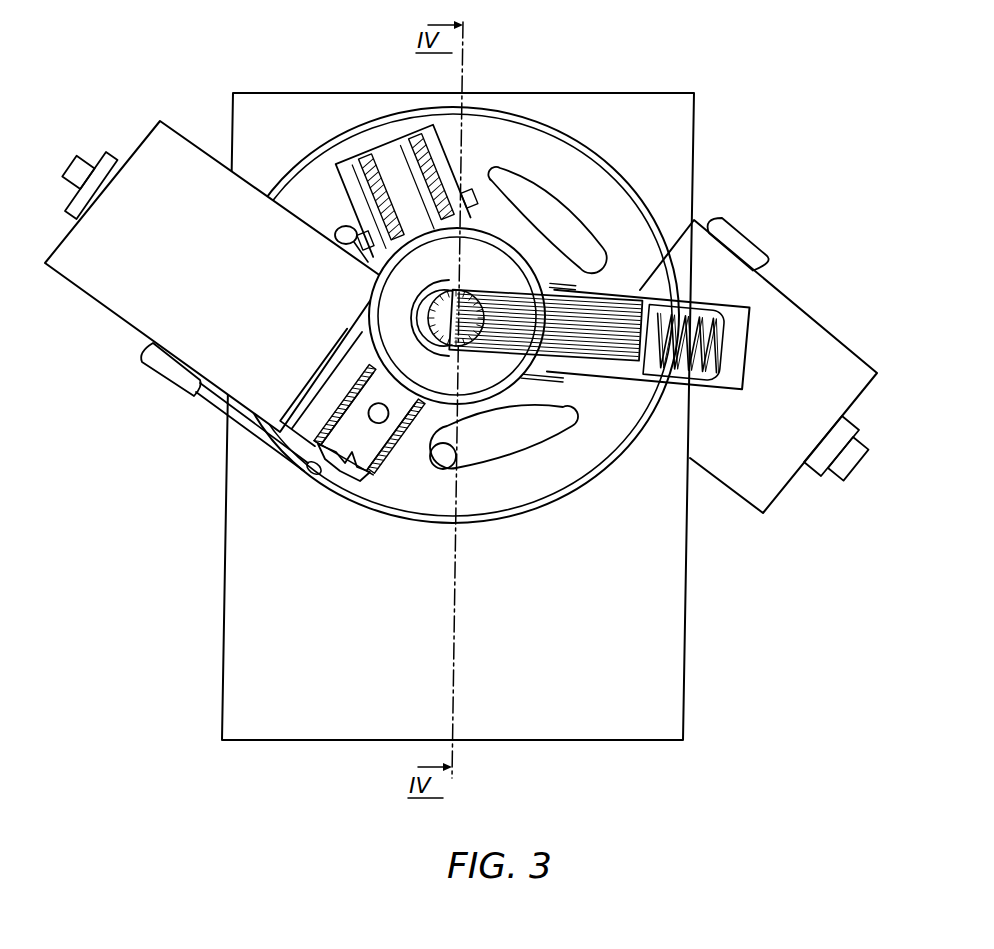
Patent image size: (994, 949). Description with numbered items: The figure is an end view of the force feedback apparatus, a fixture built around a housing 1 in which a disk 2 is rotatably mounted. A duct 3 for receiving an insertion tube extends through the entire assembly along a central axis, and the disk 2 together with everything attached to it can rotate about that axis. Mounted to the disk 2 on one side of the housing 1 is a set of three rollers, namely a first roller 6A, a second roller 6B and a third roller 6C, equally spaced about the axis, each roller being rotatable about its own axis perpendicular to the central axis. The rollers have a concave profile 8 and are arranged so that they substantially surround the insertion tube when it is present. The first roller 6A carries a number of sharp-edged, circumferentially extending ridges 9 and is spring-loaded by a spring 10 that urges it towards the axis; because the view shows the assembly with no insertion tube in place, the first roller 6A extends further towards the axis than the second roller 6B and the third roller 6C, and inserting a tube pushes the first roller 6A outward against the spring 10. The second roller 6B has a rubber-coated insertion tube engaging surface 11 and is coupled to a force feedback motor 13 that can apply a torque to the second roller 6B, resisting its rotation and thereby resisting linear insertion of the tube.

The housing 1 is at (371, 677).
The disk 2 is at (556, 140).
The duct 3 is at (594, 244).
The first roller 6A is at (590, 404).
The second roller 6B is at (378, 450).
The third roller 6C is at (392, 146).
The concave profile 8 is at (343, 455).
The ridges 9 is at (588, 308).
The spring 10 is at (722, 328).
The insertion tube engaging surface 11 is at (308, 468).
The motor 13 is at (797, 406).